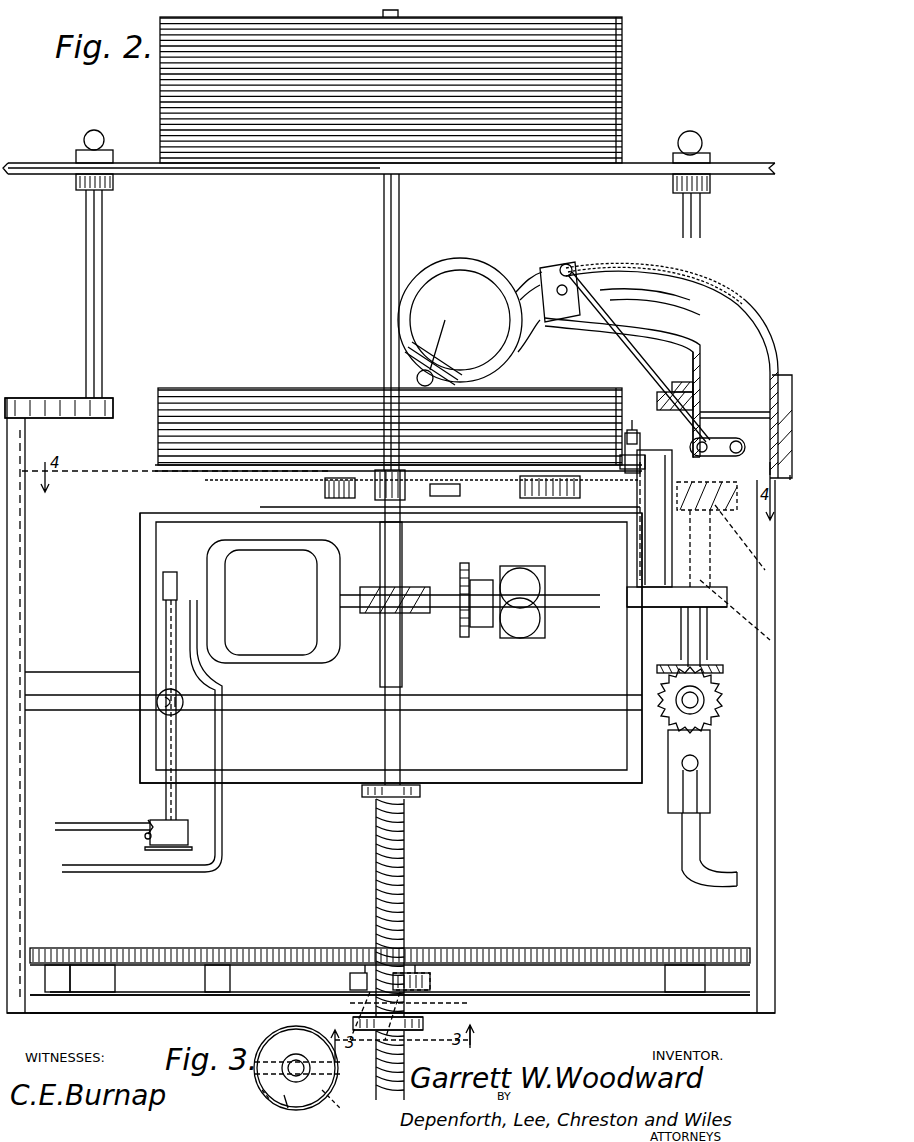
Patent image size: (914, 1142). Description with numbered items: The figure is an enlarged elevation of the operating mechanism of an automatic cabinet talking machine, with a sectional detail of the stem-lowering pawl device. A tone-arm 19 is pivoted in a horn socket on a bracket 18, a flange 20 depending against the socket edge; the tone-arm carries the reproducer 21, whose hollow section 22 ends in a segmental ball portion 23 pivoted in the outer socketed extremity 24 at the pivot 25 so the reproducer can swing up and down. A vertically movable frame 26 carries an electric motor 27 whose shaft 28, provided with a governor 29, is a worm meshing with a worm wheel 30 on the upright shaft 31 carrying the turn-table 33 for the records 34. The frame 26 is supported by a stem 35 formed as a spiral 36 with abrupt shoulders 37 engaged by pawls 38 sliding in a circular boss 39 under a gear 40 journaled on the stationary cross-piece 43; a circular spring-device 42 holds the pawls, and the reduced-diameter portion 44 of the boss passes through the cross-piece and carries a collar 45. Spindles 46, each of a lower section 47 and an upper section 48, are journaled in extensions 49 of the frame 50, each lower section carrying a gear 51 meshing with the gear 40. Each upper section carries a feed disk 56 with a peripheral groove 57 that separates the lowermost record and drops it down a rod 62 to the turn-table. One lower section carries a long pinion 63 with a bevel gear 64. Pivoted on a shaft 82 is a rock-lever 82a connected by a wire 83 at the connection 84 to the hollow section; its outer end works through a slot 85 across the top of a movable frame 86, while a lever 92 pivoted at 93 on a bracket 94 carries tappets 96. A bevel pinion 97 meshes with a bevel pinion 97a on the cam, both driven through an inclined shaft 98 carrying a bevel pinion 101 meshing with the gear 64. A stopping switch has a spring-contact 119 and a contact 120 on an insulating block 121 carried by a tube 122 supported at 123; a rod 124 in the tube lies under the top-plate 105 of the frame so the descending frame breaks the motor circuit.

In FIG. 2, the bracket 18 is at (657, 400).
In FIG. 2, the tone-arm 19 is at (760, 300).
In FIG. 2, the flange 20 is at (693, 360).
In FIG. 2, the reproducer 21 is at (460, 276).
In FIG. 2, the hollow section 22 is at (528, 276).
In FIG. 2, the segmental ball portion 23 is at (562, 272).
In FIG. 2, the outer socketed extremity 24 is at (618, 262).
In FIG. 2, the pivot 25 is at (550, 300).
In FIG. 2, the vertically movable frame 26 is at (391, 648).
In FIG. 2, the electric motor 27 is at (273, 601).
In FIG. 2, the shaft 28 is at (460, 585).
In FIG. 2, the governor 29 is at (515, 572).
In FIG. 2, the worm wheel 30 is at (418, 613).
In FIG. 2, the upright shaft 31 is at (384, 560).
In FIG. 2, the turn-table 33 is at (335, 465).
In FIG. 2, the records 34 is at (622, 83).
In FIG. 2, the stem 35 is at (450, 870).
In FIG. 3, the stem 35 is at (292, 1060).
In FIG. 2, the spiral 36 is at (405, 835).
In FIG. 2, the abrupt shoulders 37 is at (380, 940).
In FIG. 2, the pawls 38 is at (350, 982).
In FIG. 3, the pawls 38 is at (295, 1107).
In FIG. 2, the circular boss 39 is at (420, 960).
In FIG. 2, the gear 40 is at (538, 948).
In FIG. 2, the circular spring-device 42 is at (460, 948).
In FIG. 3, the circular spring-device 42 is at (256, 1078).
In FIG. 2, the cross-piece 43 is at (545, 1005).
In FIG. 2, the reduced-diameter portion 44 is at (410, 1016).
In FIG. 3, the reduced-diameter portion 44 is at (309, 1067).
In FIG. 2, the collar 45 is at (475, 1028).
In FIG. 3, the collar 45 is at (287, 1111).
In FIG. 2, the spindles 46 is at (682, 890).
In FIG. 2, the lower spindle section 47 is at (98, 552).
In FIG. 2, the upper spindle section 48 is at (700, 222).
In FIG. 2, the extensions 49 is at (62, 398).
In FIG. 2, the frame 50 is at (165, 1005).
In FIG. 2, the gear 51 is at (135, 948).
In FIG. 2, the feed disk 56 is at (399, 158).
In FIG. 2, the groove 57 is at (785, 200).
In FIG. 2, the rod 62 is at (384, 250).
In FIG. 2, the pinion 63 is at (707, 640).
In FIG. 2, the bevel gear 64 is at (722, 668).
In FIG. 2, the shaft 82 is at (706, 440).
In FIG. 2, the rock-lever 82a is at (665, 440).
In FIG. 2, the wire 83 is at (706, 345).
In FIG. 2, the connection point 84 is at (573, 266).
In FIG. 2, the slot 85 is at (672, 384).
In FIG. 2, the vertically movable frame 86 is at (645, 520).
In FIG. 2, the lever 92 is at (645, 540).
In FIG. 2, the pivot 93 is at (630, 600).
In FIG. 2, the bracket 94 is at (640, 608).
In FIG. 2, the tappets 96 is at (629, 422).
In FIG. 2, the bevel pinion 97 is at (710, 530).
In FIG. 2, the bevel pinion 97a is at (725, 448).
In FIG. 2, the inclined shaft 98 is at (745, 575).
In FIG. 2, the bevel pinion 101 is at (720, 712).
In FIG. 2, the top-plate 105 is at (185, 513).
In FIG. 2, the spring-contact 119 is at (168, 850).
In FIG. 2, the contact 120 is at (104, 838).
In FIG. 2, the block 121 is at (190, 828).
In FIG. 2, the tube 122 is at (205, 747).
In FIG. 2, the support 123 is at (160, 710).
In FIG. 2, the rod 124 is at (170, 572).